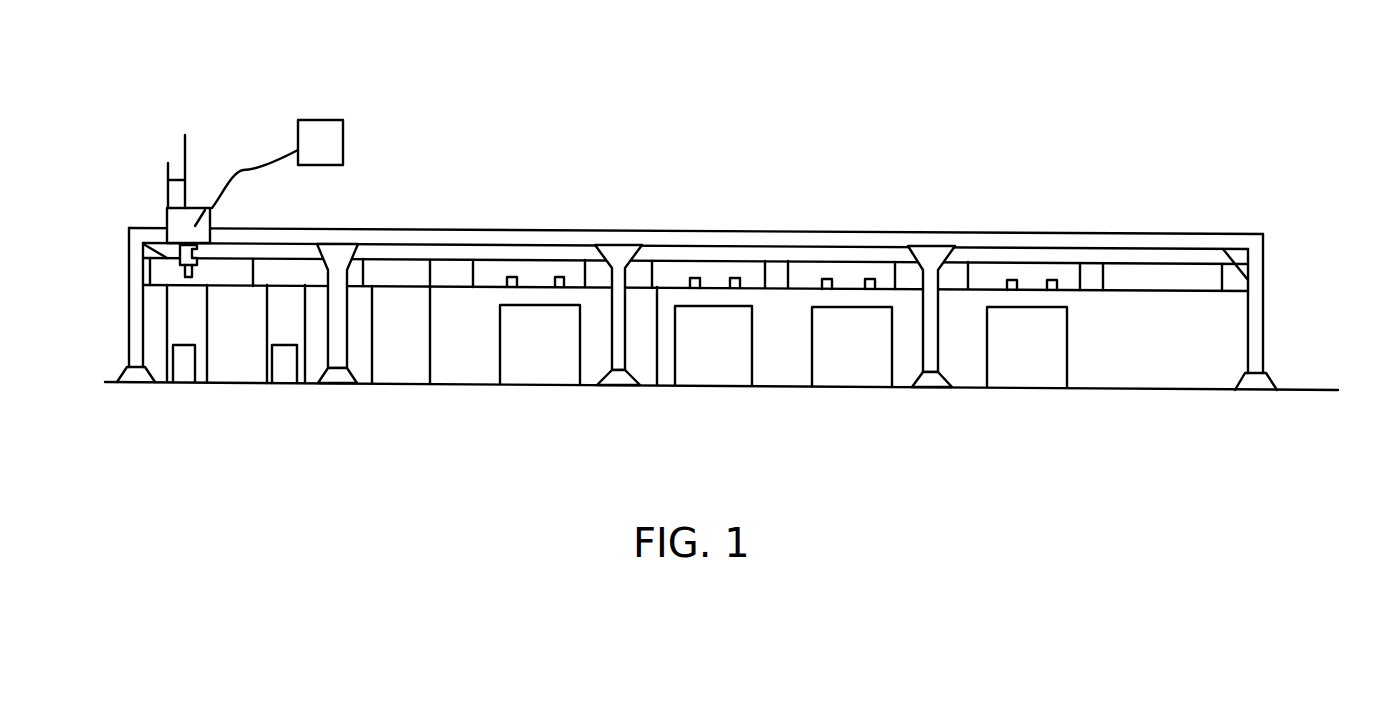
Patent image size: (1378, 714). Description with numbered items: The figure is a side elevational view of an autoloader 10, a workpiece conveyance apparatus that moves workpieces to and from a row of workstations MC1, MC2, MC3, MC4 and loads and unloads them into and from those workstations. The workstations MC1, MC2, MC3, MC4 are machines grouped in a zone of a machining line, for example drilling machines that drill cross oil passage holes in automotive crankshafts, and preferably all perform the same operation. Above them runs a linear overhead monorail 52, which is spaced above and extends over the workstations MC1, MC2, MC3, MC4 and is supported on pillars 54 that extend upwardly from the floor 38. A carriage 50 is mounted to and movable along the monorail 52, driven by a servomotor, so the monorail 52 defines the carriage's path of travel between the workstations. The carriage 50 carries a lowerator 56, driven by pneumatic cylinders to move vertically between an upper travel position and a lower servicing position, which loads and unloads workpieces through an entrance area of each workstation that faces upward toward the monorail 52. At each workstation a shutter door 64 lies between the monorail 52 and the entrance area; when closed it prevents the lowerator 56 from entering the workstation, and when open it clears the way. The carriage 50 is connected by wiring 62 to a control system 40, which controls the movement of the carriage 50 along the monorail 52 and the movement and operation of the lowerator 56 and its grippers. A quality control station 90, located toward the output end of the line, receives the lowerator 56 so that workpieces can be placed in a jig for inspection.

The autoloader 10 is at (472, 190).
The floor 38 is at (453, 385).
The control system 40 is at (328, 128).
The carriage 50 is at (168, 220).
The overhead monorail 52 is at (654, 236).
The pillars 54 is at (130, 316).
The lowerator 56 is at (202, 253).
The wiring 62 is at (243, 170).
The shutter door 64 is at (538, 285).
The quality control station 90 is at (388, 385).
The workstation MC1 is at (537, 386).
The workstation MC2 is at (723, 386).
The workstation MC3 is at (852, 387).
The workstation MC4 is at (1023, 388).